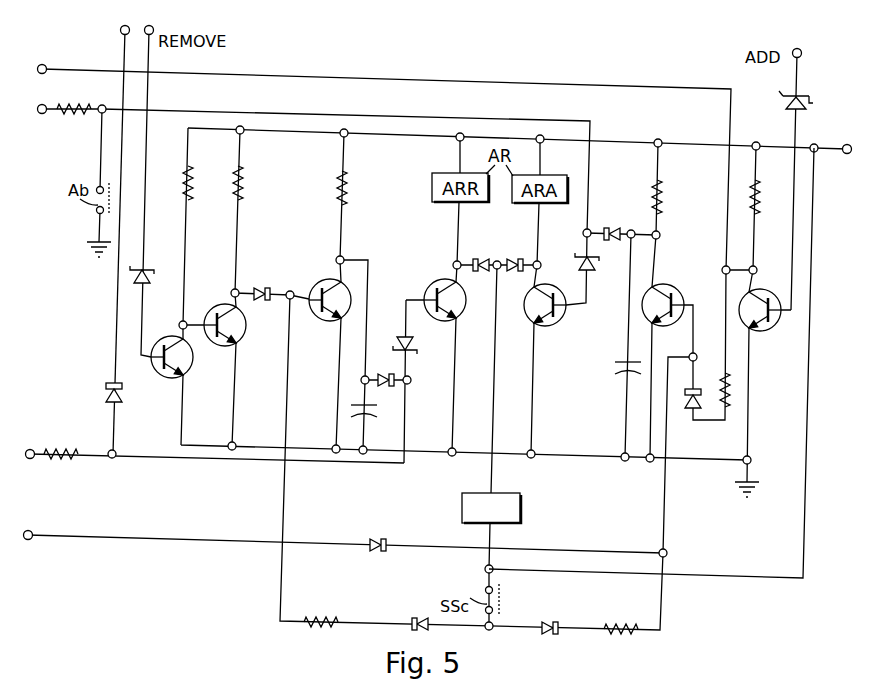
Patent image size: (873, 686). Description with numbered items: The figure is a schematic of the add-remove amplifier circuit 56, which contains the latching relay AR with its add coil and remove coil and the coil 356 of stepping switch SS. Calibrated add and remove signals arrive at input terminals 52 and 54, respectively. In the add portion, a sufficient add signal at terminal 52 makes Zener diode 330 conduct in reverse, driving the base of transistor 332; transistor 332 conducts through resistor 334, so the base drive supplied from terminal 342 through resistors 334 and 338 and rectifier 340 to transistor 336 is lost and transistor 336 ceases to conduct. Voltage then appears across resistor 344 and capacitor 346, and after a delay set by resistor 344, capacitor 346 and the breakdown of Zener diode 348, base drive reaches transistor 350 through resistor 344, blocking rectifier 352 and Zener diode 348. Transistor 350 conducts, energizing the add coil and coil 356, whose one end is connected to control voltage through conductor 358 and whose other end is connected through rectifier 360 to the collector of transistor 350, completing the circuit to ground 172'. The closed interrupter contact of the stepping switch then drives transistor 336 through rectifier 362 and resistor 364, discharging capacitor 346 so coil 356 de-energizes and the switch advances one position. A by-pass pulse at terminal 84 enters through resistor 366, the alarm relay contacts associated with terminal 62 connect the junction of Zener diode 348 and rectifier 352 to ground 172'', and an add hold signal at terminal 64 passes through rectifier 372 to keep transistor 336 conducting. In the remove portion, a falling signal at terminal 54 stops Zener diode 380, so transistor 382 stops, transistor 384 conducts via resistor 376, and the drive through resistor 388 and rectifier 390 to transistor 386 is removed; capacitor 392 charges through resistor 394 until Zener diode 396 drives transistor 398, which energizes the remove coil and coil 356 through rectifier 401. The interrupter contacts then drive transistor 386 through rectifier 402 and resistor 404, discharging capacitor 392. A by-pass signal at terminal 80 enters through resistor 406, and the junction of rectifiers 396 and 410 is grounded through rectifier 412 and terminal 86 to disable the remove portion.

The add-remove amplifier circuit 56 is at (460, 44).
The input terminal 52 is at (797, 48).
The input terminal 54 is at (149, 26).
The terminal 62 is at (45, 67).
The terminal 64 is at (30, 533).
The terminal 80 is at (34, 460).
The terminal 84 is at (43, 114).
The terminal 86 is at (128, 20).
The ground 172' is at (722, 485).
The ground 172'' is at (79, 239).
The Zener diode 330 is at (822, 92).
The transistor 332 is at (777, 333).
The resistor 334 is at (745, 194).
The transistor 336 is at (680, 292).
The resistor 338 is at (740, 402).
The rectifier 340 is at (692, 415).
The terminal 342 is at (843, 148).
The resistor 344 is at (645, 190).
The capacitor 346 is at (614, 375).
The Zener diode 348 is at (575, 257).
The transistor 350 is at (568, 317).
The blocking rectifier 352 is at (604, 230).
The coil 356 is at (522, 510).
The conductor 358 is at (795, 575).
The rectifier 360 is at (517, 258).
The rectifier 362 is at (546, 605).
The resistor 364 is at (625, 614).
The resistor 366 is at (69, 104).
The rectifier 372 is at (383, 540).
The resistor 376 is at (196, 180).
The Zener diode 380 is at (149, 268).
The transistor 382 is at (186, 372).
The transistor 384 is at (240, 342).
The transistor 386 is at (308, 326).
The resistor 388 is at (246, 180).
The rectifier 390 is at (268, 287).
The capacitor 392 is at (376, 412).
The resistor 394 is at (350, 185).
The Zener diode 396 is at (398, 338).
The transistor 398 is at (425, 278).
The rectifier 401 is at (478, 260).
The rectifier 402 is at (401, 610).
The resistor 404 is at (315, 609).
The resistor 406 is at (75, 437).
The rectifier 410 is at (403, 386).
The rectifier 412 is at (122, 402).